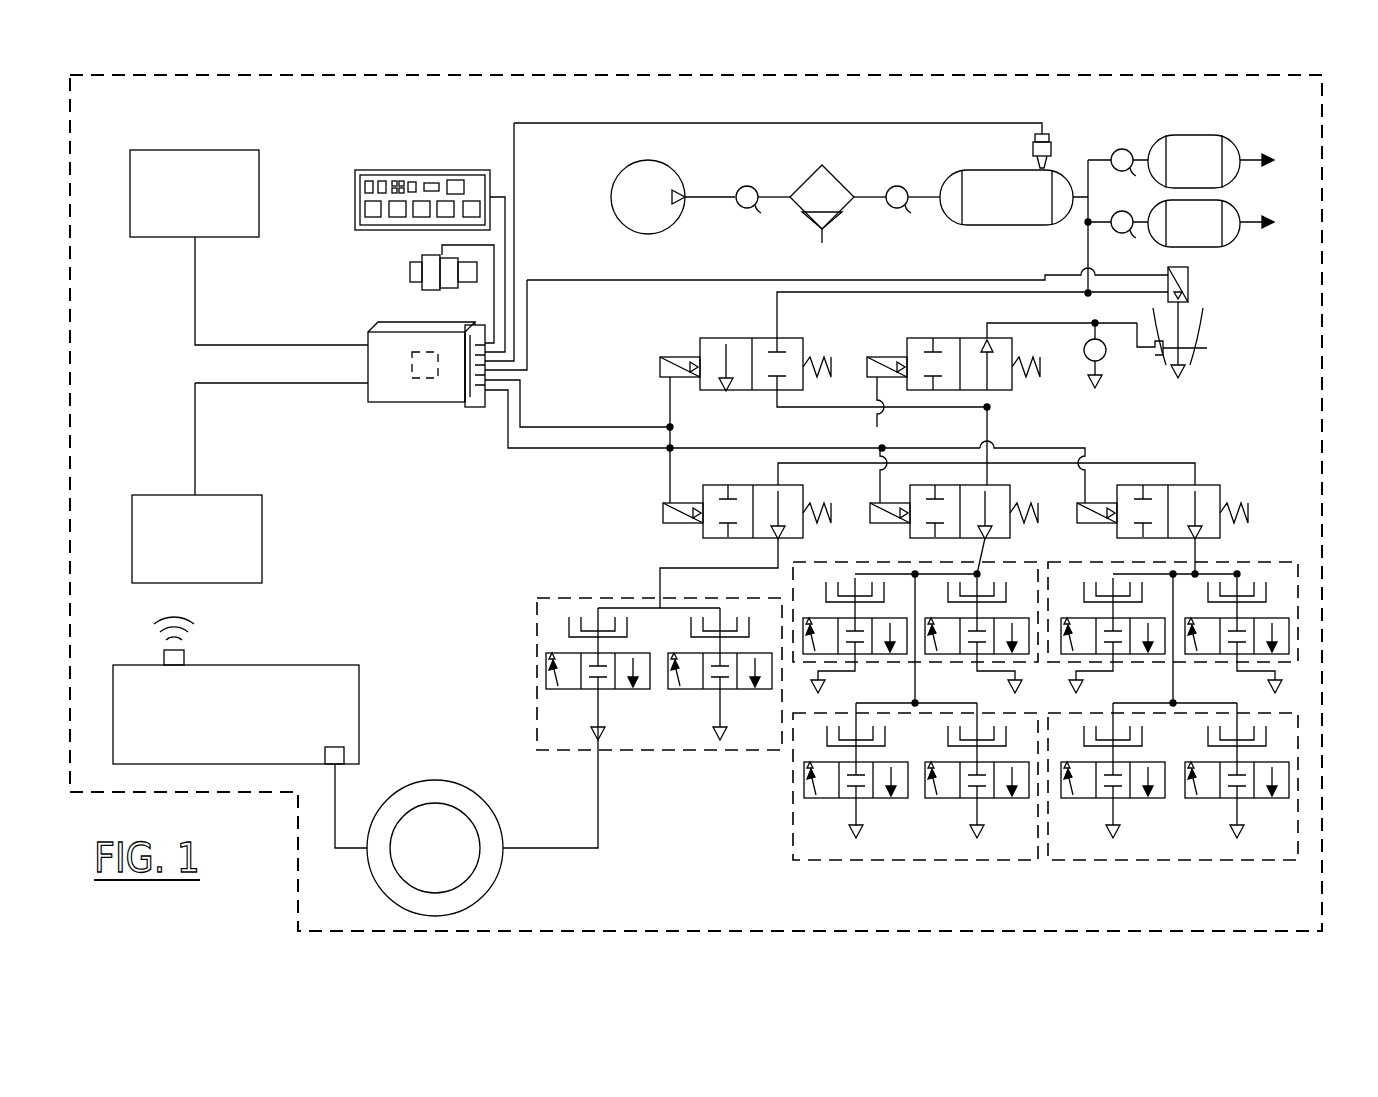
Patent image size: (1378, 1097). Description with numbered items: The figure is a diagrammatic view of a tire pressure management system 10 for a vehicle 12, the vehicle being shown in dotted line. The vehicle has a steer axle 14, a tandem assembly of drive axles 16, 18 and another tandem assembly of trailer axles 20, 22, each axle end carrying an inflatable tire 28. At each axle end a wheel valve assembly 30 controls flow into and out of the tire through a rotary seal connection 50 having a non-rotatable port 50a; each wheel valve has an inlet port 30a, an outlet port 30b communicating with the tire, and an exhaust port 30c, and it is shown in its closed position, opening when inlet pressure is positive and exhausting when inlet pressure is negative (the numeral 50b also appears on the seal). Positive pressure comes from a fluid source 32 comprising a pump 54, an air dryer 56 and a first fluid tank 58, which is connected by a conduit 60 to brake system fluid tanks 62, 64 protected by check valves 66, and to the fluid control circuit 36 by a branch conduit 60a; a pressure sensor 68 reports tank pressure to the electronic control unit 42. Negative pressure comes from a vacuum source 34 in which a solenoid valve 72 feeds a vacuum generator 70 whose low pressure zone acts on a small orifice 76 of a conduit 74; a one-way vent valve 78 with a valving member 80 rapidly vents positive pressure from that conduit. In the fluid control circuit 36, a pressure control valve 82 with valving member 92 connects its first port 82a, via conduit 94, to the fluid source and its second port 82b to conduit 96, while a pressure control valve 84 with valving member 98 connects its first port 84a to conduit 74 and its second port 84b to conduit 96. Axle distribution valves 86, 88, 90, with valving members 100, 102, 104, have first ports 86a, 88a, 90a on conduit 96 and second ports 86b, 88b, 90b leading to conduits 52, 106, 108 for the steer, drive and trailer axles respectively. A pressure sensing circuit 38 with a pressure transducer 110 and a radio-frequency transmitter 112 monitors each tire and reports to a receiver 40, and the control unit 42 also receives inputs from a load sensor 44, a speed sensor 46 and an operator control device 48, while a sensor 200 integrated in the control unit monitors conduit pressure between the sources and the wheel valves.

The tire pressure management system 10 is at (488, 478).
The vehicle 12 is at (750, 74).
The steer axle 14 is at (555, 598).
The drive axle 16 is at (848, 566).
The drive axle 18 is at (790, 822).
The trailer axle 20 is at (1300, 590).
The trailer axle 22 is at (1300, 748).
The inflatable tire 28 is at (444, 781).
The wheel valve assembly 30 is at (556, 687).
The inlet port 30a is at (720, 640).
The outlet port 30b is at (598, 705).
The exhaust port 30c is at (555, 652).
The fluid source 32 is at (712, 188).
The vacuum source 34 is at (1216, 309).
The fluid control circuit 36 is at (754, 276).
The pressure sensing circuit 38 is at (341, 665).
The receiver 40 is at (264, 529).
The electronic control unit 42 is at (415, 403).
The load sensor 44 is at (232, 143).
The speed sensor 46 is at (410, 275).
The operator control device 48 is at (400, 170).
The rotary seal connection 50 is at (565, 627).
The non-rotatable port 50a is at (598, 625).
The air spring 50b is at (585, 644).
The conduit 52 is at (660, 580).
The pump 54 is at (628, 180).
The air dryer 56 is at (838, 185).
The first fluid tank 58 is at (977, 223).
The conduit 60 is at (1080, 158).
The branch conduit 60a is at (1086, 248).
The brake system fluid tank 62 is at (1210, 146).
The brake system fluid tank 64 is at (1224, 218).
The check valve 66 is at (1135, 213).
The pressure sensor 68 is at (1034, 146).
The vacuum generator 70 is at (1206, 323).
The solenoid valve 72 is at (1197, 287).
The conduit 74 is at (1110, 323).
The small orifice 76 is at (1207, 351).
The one-way vent valve 78 is at (1120, 354).
The valving member 80 is at (1104, 360).
The pressure control valve 82 is at (705, 336).
The first port 82a is at (770, 336).
The second port 82b is at (770, 394).
The pressure control valve 84 is at (922, 336).
The first port 84a is at (987, 336).
The second port 84b is at (992, 396).
The axle distribution valve 86 is at (703, 488).
The first port 86a is at (778, 486).
The second port 86b is at (770, 540).
The axle distribution valve 88 is at (916, 476).
The first port 88a is at (985, 480).
The second port 88b is at (985, 542).
The axle distribution valve 90 is at (1138, 483).
The first port 90a is at (1198, 482).
The second port 90b is at (1200, 546).
The valving member 92 is at (796, 342).
The conduit 94 is at (790, 292).
The conduit 96 is at (992, 434).
The valving member 98 is at (1020, 386).
The valving member 100 is at (803, 500).
The valving member 102 is at (1010, 500).
The valving member 104 is at (1222, 486).
The conduit 106 is at (992, 540).
The conduit 108 is at (1200, 556).
The pressure transducer 110 is at (346, 746).
The radio-frequency transmitter 112 is at (192, 655).
The sensor 200 is at (412, 365).